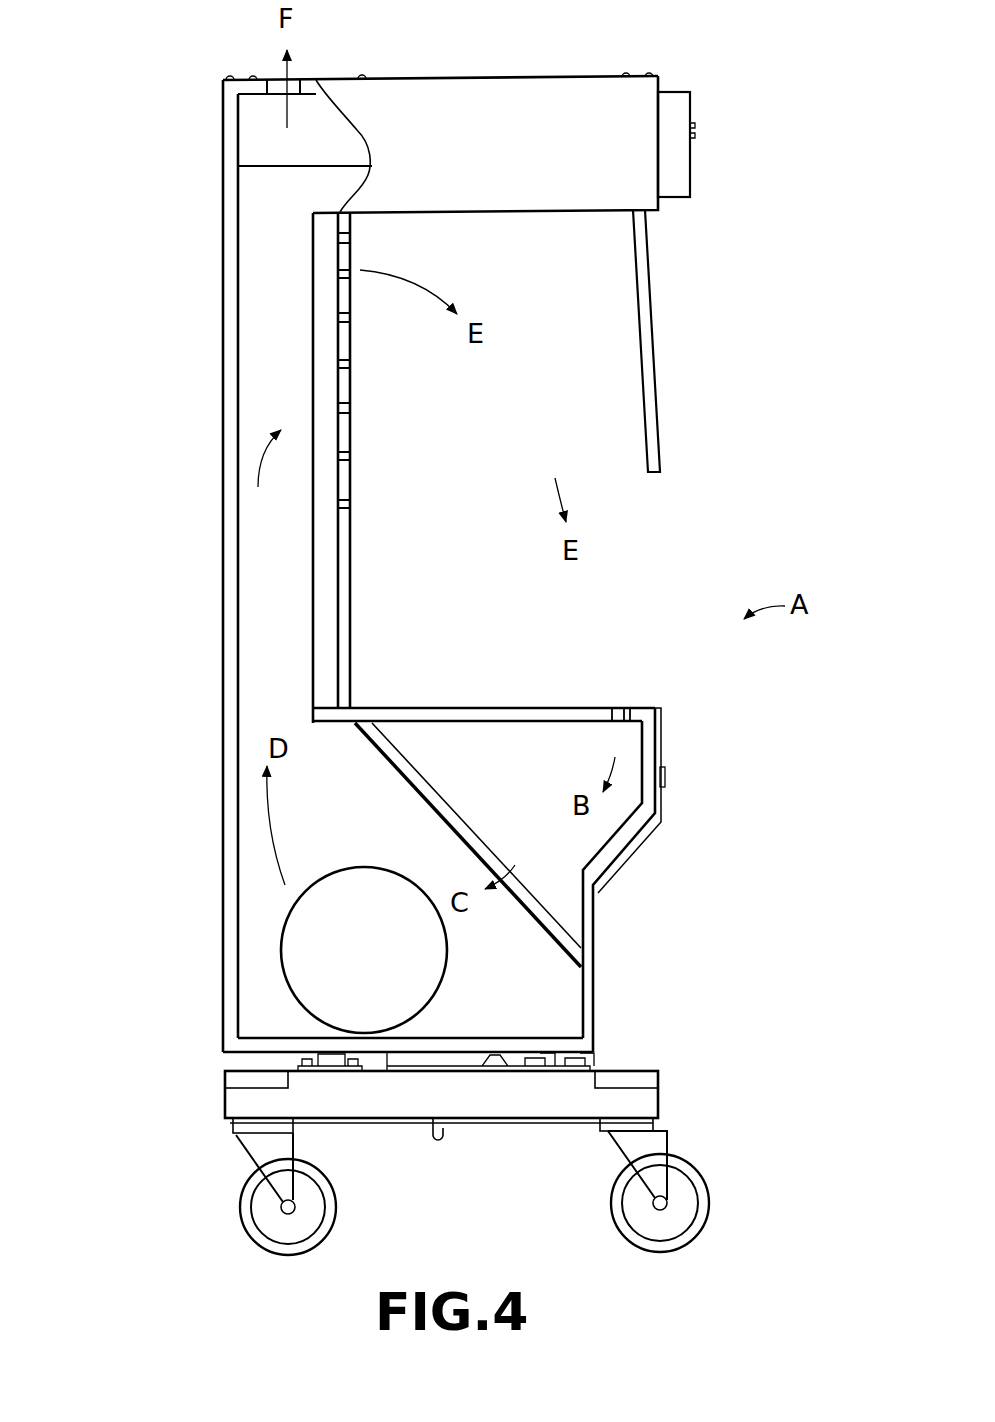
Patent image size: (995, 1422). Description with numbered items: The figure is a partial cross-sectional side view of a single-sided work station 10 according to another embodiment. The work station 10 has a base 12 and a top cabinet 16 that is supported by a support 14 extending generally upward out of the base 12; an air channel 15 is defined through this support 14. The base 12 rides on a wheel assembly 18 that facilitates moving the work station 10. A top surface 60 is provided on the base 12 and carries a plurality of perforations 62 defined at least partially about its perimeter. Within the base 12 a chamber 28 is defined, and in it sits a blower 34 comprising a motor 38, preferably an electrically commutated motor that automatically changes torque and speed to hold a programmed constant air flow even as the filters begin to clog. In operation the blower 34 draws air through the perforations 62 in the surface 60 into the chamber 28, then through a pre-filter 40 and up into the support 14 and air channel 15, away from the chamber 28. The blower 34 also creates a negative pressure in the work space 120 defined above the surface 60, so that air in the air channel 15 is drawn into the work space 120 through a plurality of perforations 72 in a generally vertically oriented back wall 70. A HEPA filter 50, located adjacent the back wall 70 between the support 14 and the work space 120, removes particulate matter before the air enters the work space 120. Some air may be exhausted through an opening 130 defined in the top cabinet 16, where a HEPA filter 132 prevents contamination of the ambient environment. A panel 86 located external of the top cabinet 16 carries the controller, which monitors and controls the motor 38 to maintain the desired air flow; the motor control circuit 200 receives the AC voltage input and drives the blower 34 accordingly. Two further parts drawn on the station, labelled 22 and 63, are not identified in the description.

The single-sided work station 10 is at (408, 630).
The base 12 is at (182, 912).
The support 14 is at (268, 626).
The air channel 15 is at (300, 321).
The top cabinet 16 is at (267, 66).
The wheel assembly 18 is at (225, 1100).
The front wall 22 is at (565, 975).
The chamber 28 is at (338, 856).
The blower 34 is at (455, 931).
The motor 38 is at (427, 990).
The pre-filter 40 is at (420, 782).
The HEPA filter 50 is at (330, 528).
The top surface 60 is at (501, 680).
The perforations 62 is at (626, 706).
The support leg 63 is at (660, 412).
The back wall 70 is at (376, 468).
The perforations 72 is at (352, 363).
The panel 86 is at (690, 102).
The work space 120 is at (528, 443).
The opening 130 is at (290, 84).
The HEPA filter 132 is at (258, 150).
The motor control circuit 200 is at (462, 132).